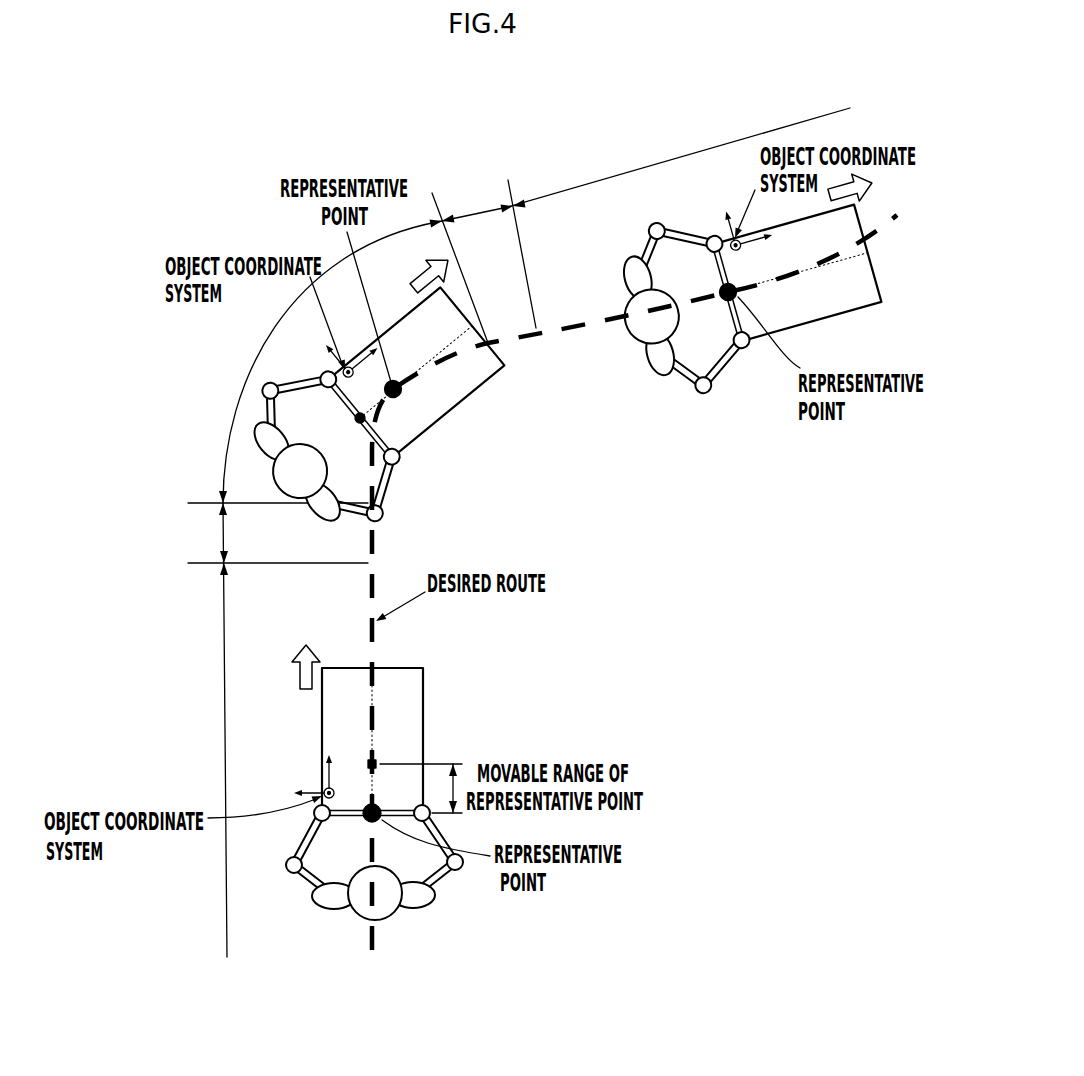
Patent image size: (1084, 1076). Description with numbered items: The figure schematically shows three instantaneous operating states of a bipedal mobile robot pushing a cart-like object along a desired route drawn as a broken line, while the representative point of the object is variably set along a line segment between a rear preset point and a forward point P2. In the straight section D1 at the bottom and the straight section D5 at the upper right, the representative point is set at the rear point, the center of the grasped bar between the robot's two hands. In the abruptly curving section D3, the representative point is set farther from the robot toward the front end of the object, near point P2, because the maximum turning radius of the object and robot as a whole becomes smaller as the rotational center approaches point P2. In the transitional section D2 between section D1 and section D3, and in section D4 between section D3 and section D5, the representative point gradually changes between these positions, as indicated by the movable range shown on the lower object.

The point P2 is at (380, 762).
The section D1 is at (278, 730).
The section D2 is at (278, 533).
The section D3 is at (330, 361).
The section D4 is at (484, 261).
The section D5 is at (679, 157).